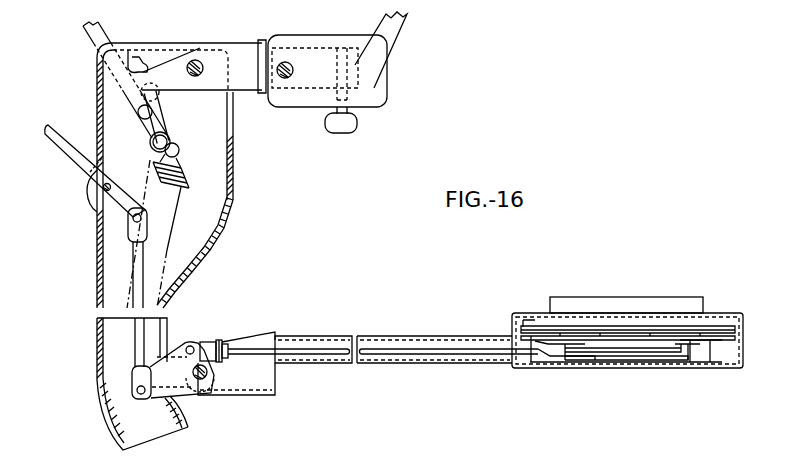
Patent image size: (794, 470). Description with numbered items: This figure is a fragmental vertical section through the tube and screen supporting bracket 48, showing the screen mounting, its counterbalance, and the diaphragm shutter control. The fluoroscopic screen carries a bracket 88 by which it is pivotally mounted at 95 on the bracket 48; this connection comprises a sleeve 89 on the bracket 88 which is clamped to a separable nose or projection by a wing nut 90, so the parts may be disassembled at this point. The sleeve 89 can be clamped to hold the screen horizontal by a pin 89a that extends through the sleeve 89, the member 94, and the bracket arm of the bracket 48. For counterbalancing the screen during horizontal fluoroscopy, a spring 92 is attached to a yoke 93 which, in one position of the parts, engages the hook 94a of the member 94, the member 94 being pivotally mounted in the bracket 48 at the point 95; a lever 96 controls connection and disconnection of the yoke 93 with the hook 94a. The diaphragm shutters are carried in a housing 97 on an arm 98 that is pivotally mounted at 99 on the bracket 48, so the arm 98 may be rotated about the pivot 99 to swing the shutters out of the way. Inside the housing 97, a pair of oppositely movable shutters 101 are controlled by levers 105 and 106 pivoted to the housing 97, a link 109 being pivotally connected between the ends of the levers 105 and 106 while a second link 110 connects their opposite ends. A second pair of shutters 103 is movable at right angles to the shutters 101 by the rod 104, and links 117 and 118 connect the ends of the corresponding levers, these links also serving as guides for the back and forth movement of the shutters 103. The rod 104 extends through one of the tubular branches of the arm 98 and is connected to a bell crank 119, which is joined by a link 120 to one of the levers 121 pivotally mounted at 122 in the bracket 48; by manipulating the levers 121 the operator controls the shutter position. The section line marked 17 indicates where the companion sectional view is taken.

The bracket 48 is at (231, 198).
The bracket 88 is at (403, 20).
The sleeve 89 is at (332, 36).
The pin 89a is at (288, 62).
The wing nut 90 is at (345, 134).
The spring 92 is at (182, 182).
The yoke 93 is at (147, 113).
The member 94 is at (232, 43).
The hook 94a is at (143, 70).
The pivot point 95 is at (194, 60).
The lever 96 is at (92, 33).
The housing 97 is at (542, 346).
The arm 98 is at (340, 336).
The pivot 99 is at (205, 377).
The shutters 101 is at (547, 329).
The shutters 103 is at (628, 352).
The rod 104 is at (437, 352).
The lever 105 is at (538, 341).
The lever 106 is at (718, 342).
The link 109 is at (565, 338).
The link 110 is at (653, 327).
The link 117 is at (578, 358).
The link 118 is at (683, 353).
The bell crank 119 is at (185, 382).
The link 120 is at (137, 260).
The lever 121 is at (50, 125).
The pivot 122 is at (105, 187).
The section line 17 is at (502, 324).